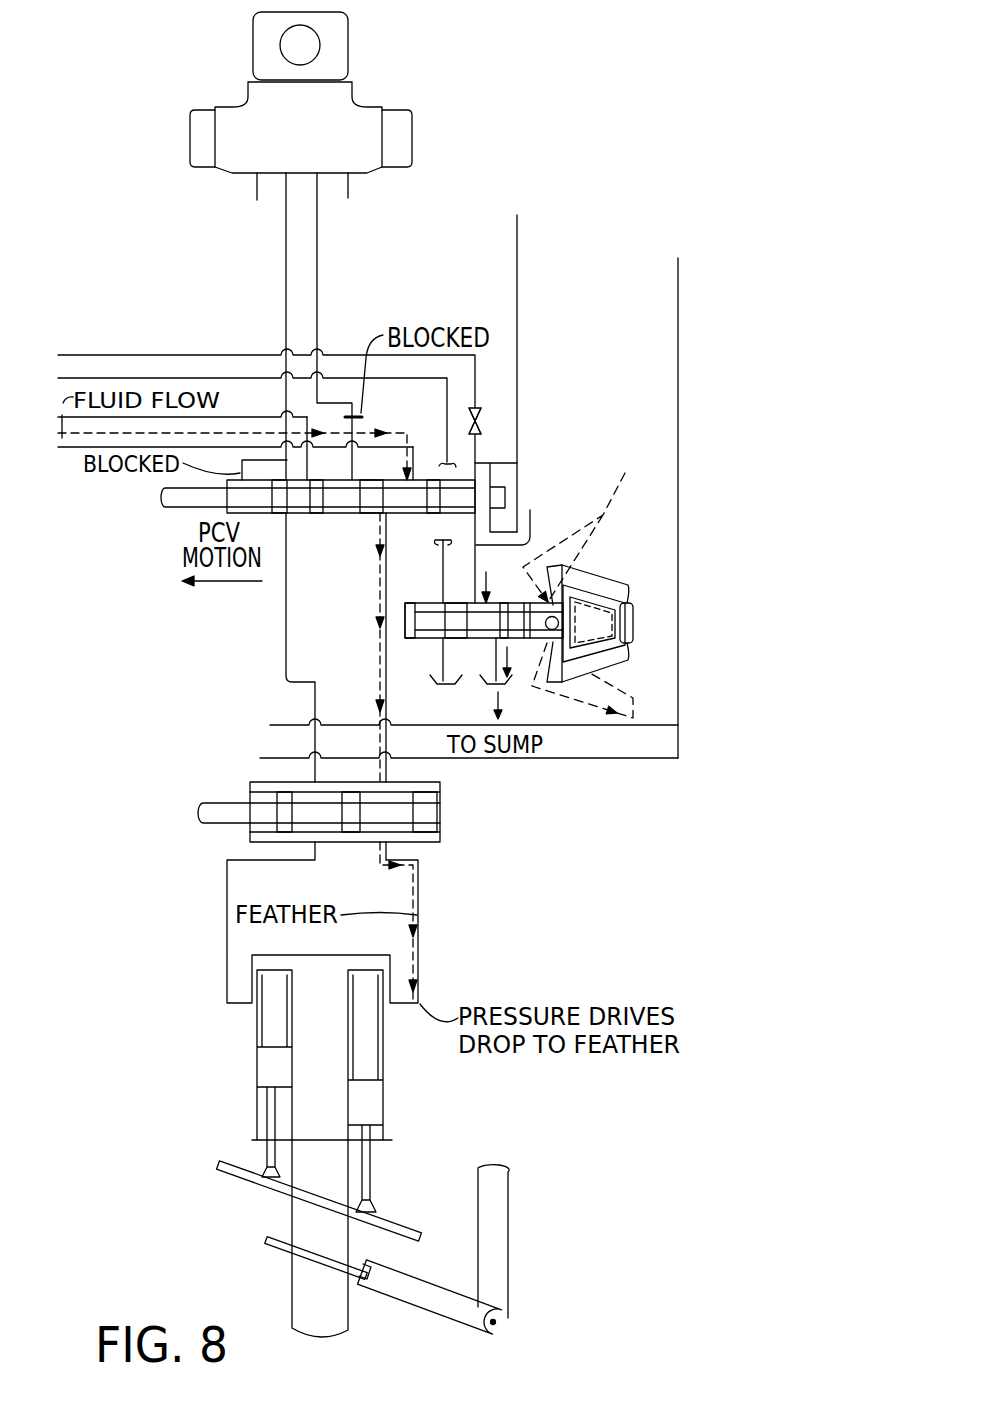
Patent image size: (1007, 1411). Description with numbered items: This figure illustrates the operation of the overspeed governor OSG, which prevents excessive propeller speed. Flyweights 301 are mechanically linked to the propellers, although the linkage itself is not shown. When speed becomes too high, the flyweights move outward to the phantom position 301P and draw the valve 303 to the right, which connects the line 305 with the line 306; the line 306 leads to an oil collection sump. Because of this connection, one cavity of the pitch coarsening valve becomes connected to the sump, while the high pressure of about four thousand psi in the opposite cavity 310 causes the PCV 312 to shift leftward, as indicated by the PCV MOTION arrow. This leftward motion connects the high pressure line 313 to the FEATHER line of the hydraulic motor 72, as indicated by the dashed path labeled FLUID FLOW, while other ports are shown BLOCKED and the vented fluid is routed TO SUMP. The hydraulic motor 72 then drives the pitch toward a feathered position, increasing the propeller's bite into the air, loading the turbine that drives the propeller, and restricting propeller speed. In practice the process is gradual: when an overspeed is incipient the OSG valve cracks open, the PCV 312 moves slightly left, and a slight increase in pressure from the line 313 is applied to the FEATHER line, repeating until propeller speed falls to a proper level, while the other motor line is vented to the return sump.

The hydraulic motor 72 is at (252, 1120).
The flyweights 301 is at (598, 668).
The phantom position 301P is at (622, 726).
The valve 303 is at (458, 617).
The line 305 is at (530, 512).
The line 306 is at (492, 655).
The cavity 310 is at (520, 473).
The pitch coarsening valve 312 is at (372, 507).
The high pressure line 313 is at (473, 421).
The overspeed governor OSG is at (623, 473).